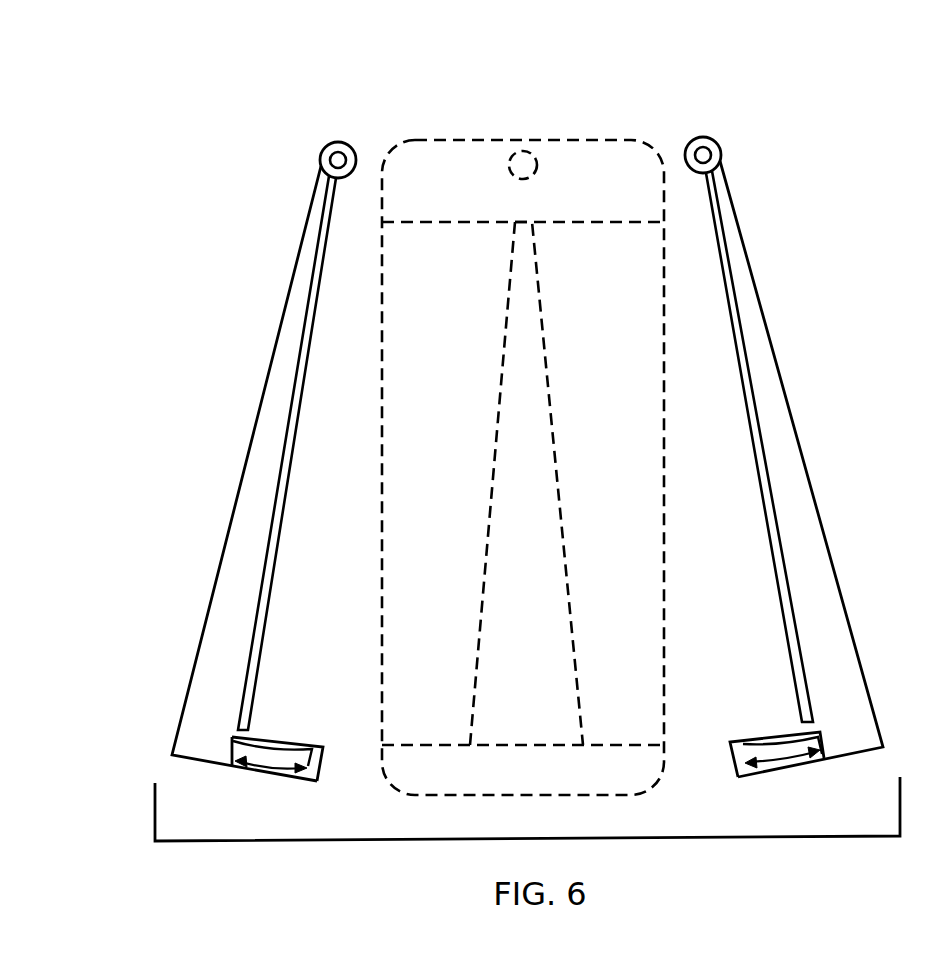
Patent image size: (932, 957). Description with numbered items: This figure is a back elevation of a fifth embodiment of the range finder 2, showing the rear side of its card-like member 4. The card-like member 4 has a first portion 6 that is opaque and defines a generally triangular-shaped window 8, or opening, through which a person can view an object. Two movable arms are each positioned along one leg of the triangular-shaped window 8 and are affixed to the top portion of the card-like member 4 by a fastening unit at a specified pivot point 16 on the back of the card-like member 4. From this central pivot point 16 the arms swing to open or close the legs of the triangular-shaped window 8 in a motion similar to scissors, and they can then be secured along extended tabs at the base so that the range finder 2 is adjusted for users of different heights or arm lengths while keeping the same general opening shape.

The range finder 2 is at (408, 437).
The card-like member 4 is at (392, 602).
The first portion 6 is at (652, 497).
The triangular-shaped window 8 is at (563, 553).
The pivot point 16 is at (517, 152).